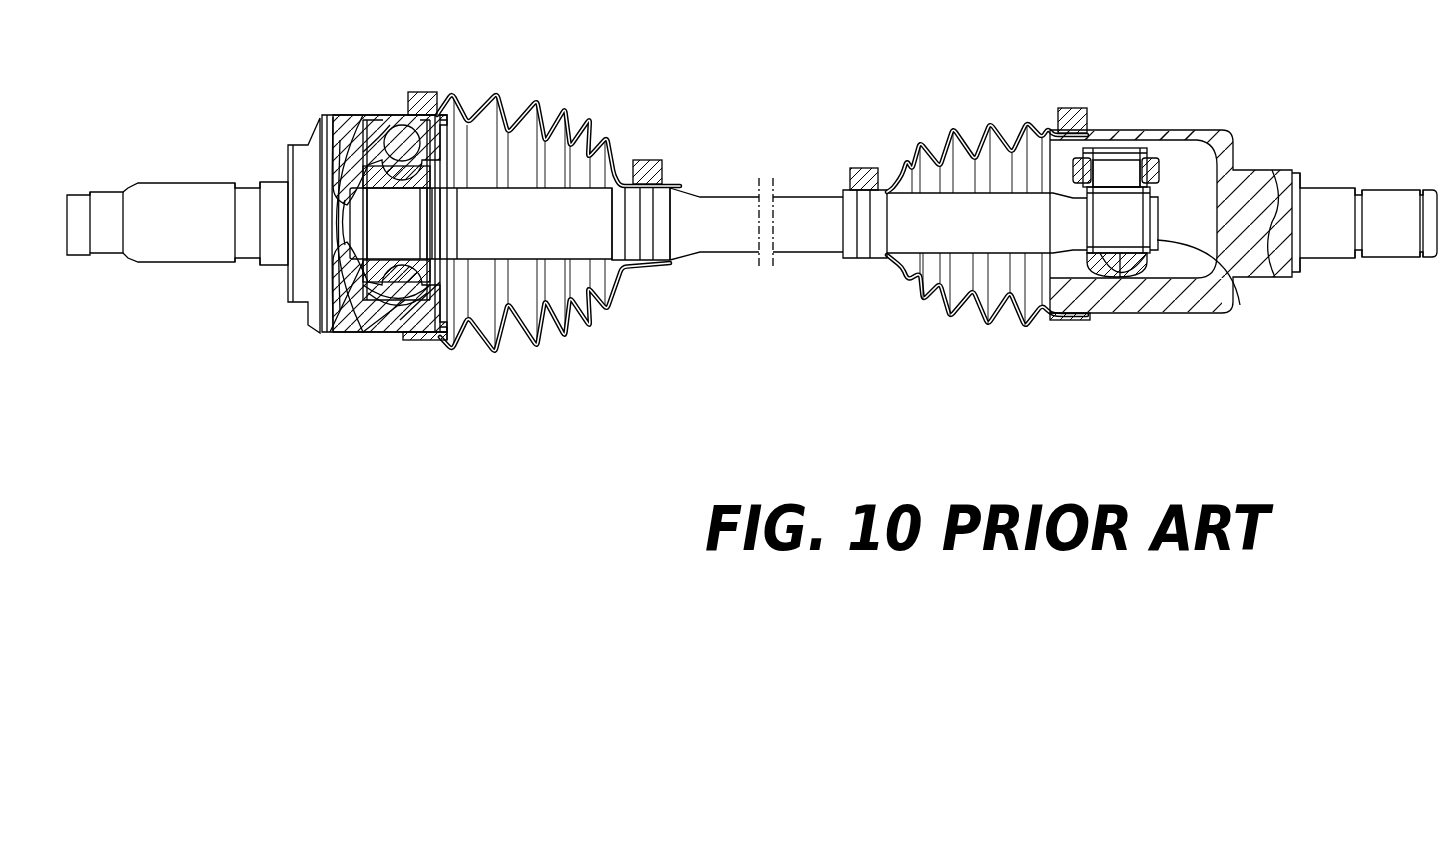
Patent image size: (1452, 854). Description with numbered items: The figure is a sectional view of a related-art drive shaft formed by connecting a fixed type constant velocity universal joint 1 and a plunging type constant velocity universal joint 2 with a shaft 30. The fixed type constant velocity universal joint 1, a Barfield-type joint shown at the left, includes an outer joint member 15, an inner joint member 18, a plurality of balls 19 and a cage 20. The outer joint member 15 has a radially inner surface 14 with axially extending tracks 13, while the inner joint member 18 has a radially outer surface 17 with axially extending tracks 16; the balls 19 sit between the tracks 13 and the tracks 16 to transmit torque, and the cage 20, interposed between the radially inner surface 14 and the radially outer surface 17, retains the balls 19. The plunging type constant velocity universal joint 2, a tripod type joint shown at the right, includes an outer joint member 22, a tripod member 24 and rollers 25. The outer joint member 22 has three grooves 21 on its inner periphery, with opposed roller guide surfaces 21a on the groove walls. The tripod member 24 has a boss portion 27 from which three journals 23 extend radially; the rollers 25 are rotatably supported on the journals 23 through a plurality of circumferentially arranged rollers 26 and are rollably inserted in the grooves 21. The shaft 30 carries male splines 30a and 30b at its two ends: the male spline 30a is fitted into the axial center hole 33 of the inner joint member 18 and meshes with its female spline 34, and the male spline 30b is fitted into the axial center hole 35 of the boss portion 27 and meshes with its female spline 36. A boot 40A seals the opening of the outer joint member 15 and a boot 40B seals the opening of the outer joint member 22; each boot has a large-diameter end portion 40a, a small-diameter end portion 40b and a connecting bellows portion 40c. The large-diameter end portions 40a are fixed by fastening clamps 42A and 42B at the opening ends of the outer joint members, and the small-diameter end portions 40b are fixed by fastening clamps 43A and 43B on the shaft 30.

The fixed type constant velocity universal joint 1 is at (689, 209).
The plunging type constant velocity universal joint 2 is at (1137, 213).
The tracks 13 is at (357, 118).
The radially inner surface 14 is at (375, 330).
The outer joint member 15 is at (342, 112).
The tracks 16 is at (445, 178).
The radially outer surface 17 is at (405, 318).
The inner joint member 18 is at (440, 278).
The balls 19 is at (402, 124).
The cage 20 is at (447, 335).
The grooves 21 is at (1193, 155).
The roller guide surfaces 21a is at (1158, 140).
The outer joint member 22 is at (1186, 316).
The journals 23 is at (1121, 150).
The tripod member 24 is at (1130, 272).
The rollers 25 is at (1160, 170).
The rollers 26 is at (1112, 158).
The boss portion 27 is at (1112, 272).
The shaft 30 is at (731, 260).
The male spline 30a is at (378, 226).
The male spline 30b is at (1236, 292).
The axial center hole 33 is at (348, 292).
The female spline 34 is at (362, 205).
The axial center hole 35 is at (1120, 280).
The female spline 36 is at (1135, 200).
The boot 40A is at (543, 88).
The boot 40B is at (950, 118).
The large-diameter end portion 40a is at (423, 92).
The small-diameter end portion 40b is at (645, 160).
The bellows portion 40c is at (545, 352).
The fastening clamp 42A is at (425, 340).
The fastening clamp 42B is at (1063, 108).
The fastening clamp 43A is at (643, 268).
The fastening clamp 43B is at (862, 262).